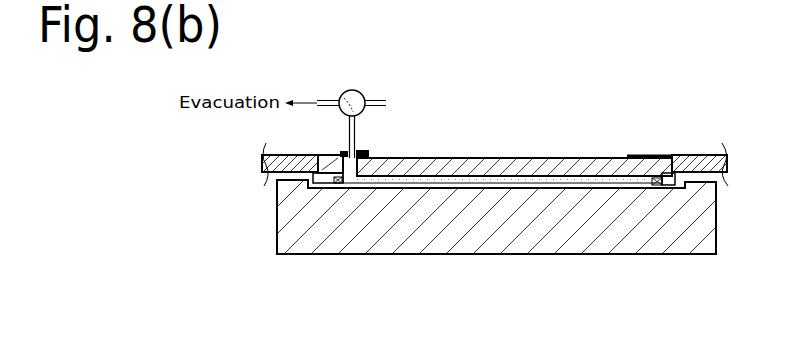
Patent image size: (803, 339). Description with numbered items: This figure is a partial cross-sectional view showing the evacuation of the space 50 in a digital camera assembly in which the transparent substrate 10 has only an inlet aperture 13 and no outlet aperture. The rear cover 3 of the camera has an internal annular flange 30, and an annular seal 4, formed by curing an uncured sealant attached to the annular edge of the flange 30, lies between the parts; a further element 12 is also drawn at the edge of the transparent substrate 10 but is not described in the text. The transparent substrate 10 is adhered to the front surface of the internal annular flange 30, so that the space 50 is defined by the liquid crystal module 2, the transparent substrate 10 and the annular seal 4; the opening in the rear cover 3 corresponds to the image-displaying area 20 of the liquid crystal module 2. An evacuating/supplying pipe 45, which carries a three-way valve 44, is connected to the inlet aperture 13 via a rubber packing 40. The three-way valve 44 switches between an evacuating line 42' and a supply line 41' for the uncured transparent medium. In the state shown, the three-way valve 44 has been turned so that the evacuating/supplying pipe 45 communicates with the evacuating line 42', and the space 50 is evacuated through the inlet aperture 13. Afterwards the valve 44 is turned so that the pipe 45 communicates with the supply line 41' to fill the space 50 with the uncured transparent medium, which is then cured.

The liquid crystal module 2 is at (505, 228).
The rear cover 3 is at (267, 162).
The annular seal 4 is at (340, 184).
The transparent substrate 10 is at (483, 158).
The clamp block 12 is at (322, 156).
The inlet aperture 13 is at (345, 156).
The image-displaying area 20 is at (452, 185).
The internal annular flange 30 is at (328, 186).
The rubber packing 40 is at (364, 152).
The supply line 41' is at (386, 79).
The evacuating line 42' is at (312, 79).
The three-way valve 44 is at (350, 90).
The evacuating/supplying pipe 45 is at (355, 130).
The space 50 is at (552, 178).